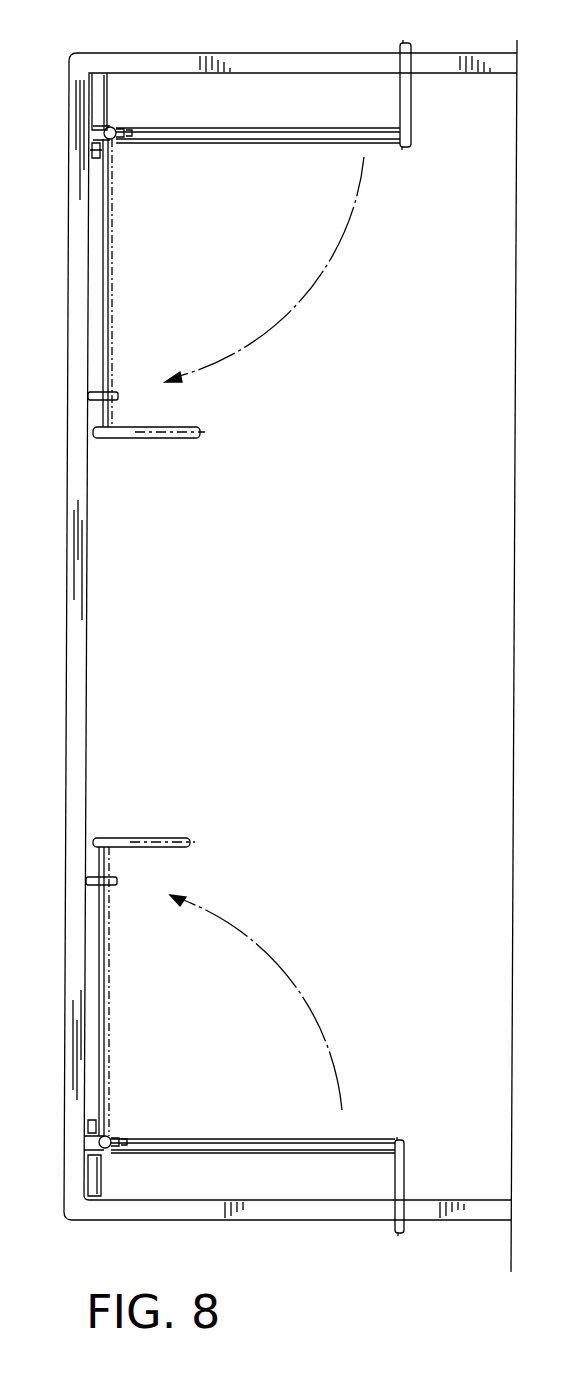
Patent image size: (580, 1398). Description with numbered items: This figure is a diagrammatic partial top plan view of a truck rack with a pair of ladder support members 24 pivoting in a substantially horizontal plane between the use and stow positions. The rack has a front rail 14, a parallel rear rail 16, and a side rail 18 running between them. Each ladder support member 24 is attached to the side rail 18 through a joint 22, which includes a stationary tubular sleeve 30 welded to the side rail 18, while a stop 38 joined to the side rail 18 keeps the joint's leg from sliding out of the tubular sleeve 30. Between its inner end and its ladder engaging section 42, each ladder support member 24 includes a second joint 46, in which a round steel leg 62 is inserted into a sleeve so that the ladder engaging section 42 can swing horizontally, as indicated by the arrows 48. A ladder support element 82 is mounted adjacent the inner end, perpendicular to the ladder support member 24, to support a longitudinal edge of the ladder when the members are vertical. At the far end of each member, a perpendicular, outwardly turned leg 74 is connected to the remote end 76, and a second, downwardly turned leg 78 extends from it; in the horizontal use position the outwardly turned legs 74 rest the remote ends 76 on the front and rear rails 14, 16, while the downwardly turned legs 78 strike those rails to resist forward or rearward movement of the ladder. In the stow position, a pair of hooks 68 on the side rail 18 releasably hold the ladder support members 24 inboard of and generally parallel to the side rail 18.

The front rail 14 is at (302, 55).
The rear rail 16 is at (310, 1224).
The side rail 18 is at (80, 655).
The joint 22 is at (100, 73).
The ladder support member 24 is at (122, 181).
The tubular sleeve 30 is at (108, 88).
The stop 38 is at (90, 150).
The ladder engaging section 42 is at (268, 133).
The joint 46 is at (122, 120).
The arrows 48 is at (306, 300).
The leg 62 is at (118, 128).
The hooks 68 is at (118, 394).
The outwardly turned leg 74 is at (412, 107).
The remote end 76 is at (402, 150).
The downwardly turned leg 78 is at (406, 45).
The ladder support element 82 is at (150, 141).